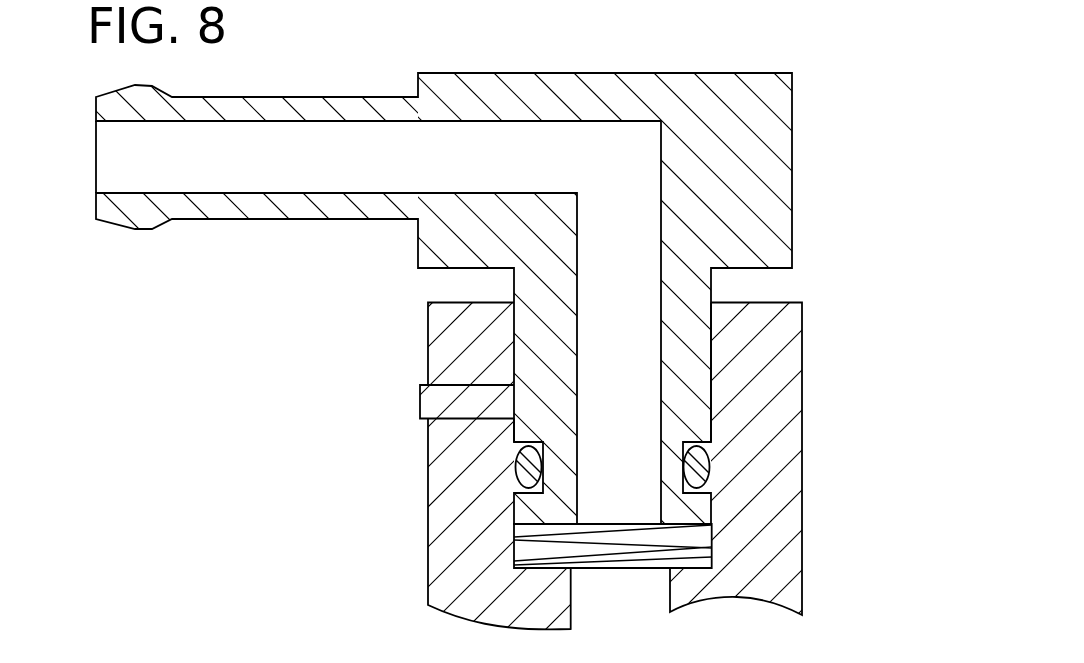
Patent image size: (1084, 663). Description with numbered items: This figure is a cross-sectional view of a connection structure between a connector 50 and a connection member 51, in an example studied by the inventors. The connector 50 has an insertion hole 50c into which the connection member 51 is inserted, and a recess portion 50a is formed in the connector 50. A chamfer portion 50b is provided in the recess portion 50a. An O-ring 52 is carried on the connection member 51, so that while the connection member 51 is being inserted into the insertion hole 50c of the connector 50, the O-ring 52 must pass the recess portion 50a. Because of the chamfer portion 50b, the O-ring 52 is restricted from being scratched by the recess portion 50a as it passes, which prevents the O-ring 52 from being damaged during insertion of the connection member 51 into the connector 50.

The connector 50 is at (428, 510).
The recess portion 50a is at (465, 385).
The chamfer portion 50b is at (513, 424).
The insertion hole 50c is at (713, 327).
The connection member 51 is at (733, 61).
The O-ring 52 is at (697, 456).